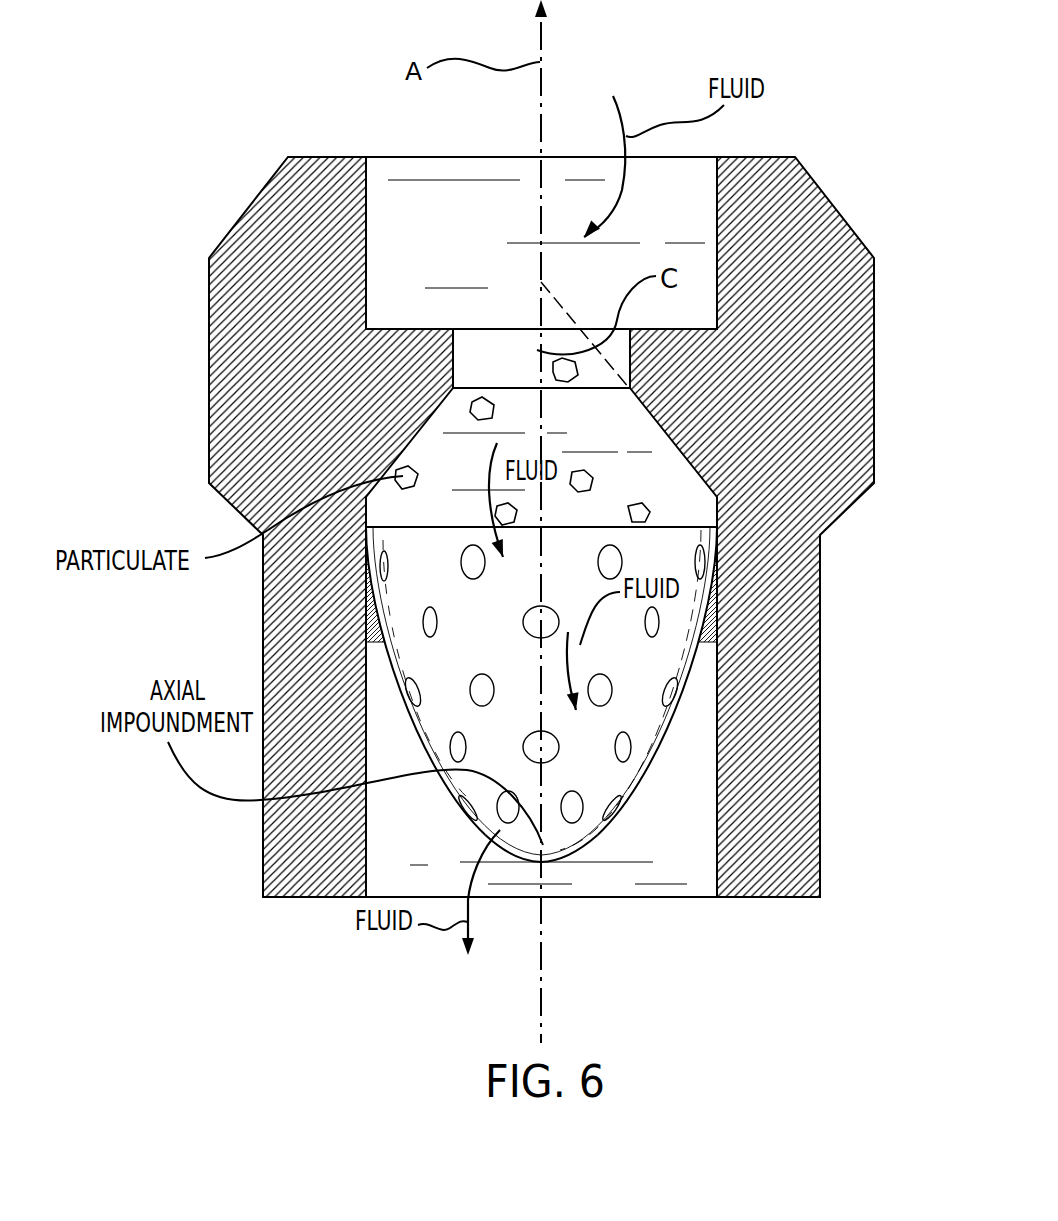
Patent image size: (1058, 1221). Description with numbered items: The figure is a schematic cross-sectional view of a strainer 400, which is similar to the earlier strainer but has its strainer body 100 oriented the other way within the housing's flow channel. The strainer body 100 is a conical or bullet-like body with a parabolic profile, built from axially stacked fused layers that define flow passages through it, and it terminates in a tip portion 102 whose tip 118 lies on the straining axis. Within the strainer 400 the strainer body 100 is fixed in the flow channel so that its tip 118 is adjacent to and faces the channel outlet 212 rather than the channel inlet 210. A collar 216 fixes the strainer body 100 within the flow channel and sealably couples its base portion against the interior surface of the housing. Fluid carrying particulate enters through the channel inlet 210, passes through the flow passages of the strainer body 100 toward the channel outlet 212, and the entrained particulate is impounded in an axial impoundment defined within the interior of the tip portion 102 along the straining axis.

The strainer 400 is at (252, 925).
The channel inlet 210 is at (700, 205).
The channel outlet 212 is at (705, 875).
The collar 216 is at (714, 624).
The strainer body 100 is at (653, 664).
The tip portion 102 is at (676, 804).
The tip 118 is at (543, 868).